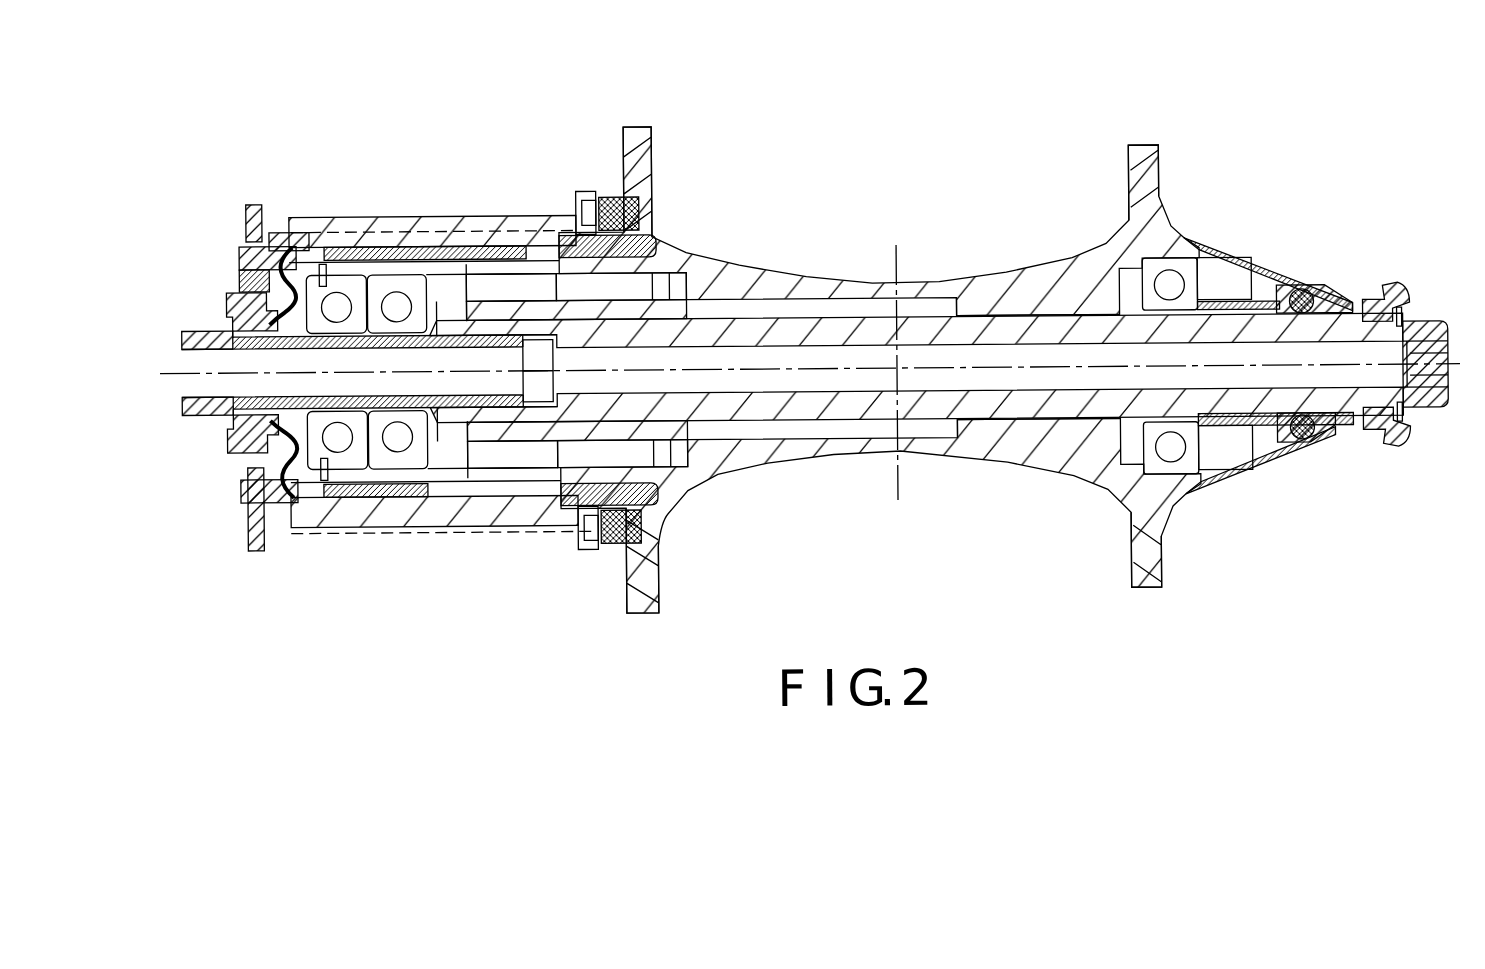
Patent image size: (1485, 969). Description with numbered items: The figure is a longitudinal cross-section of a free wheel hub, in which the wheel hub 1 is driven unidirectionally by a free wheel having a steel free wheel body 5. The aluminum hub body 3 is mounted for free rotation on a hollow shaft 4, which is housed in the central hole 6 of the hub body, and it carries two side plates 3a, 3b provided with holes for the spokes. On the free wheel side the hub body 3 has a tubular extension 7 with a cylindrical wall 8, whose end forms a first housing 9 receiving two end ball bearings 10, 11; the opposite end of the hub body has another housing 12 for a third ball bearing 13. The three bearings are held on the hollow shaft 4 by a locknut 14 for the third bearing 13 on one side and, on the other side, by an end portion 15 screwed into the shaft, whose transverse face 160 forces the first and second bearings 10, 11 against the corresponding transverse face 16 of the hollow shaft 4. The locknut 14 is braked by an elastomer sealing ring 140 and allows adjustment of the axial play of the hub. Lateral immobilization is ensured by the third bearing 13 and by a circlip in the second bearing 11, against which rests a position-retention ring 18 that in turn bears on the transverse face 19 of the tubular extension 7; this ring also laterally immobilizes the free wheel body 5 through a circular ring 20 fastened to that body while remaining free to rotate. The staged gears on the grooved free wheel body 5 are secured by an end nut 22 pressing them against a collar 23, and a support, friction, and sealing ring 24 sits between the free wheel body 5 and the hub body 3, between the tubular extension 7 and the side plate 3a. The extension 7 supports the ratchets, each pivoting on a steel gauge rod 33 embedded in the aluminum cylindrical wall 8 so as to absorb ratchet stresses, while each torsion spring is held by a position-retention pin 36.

The wheel hub 1 is at (818, 351).
The hub body 3 is at (956, 368).
The side plate 3a is at (659, 212).
The side plate 3b is at (1133, 199).
The hollow shaft 4 is at (939, 413).
The free wheel body 5 is at (425, 458).
The central hole 6 is at (1022, 403).
The tubular extension 7 is at (492, 436).
The cylindrical wall 8 is at (538, 457).
The first housing 9 is at (452, 433).
The first ball bearing 10 is at (336, 435).
The second ball bearing 11 is at (397, 429).
The housing 12 is at (1178, 413).
The third ball bearing 13 is at (1269, 408).
The locknut 14 is at (1370, 396).
The end portion 15 is at (224, 393).
The transverse face 16 is at (368, 282).
The position-retention ring 18 is at (376, 561).
The transverse face 19 is at (439, 334).
The circular ring 20 is at (424, 211).
The end nut 22 is at (249, 359).
The collar 23 is at (556, 335).
The support, friction, and sealing ring 24 is at (608, 336).
The gauge rod 33 is at (633, 328).
The position-retention pin 36 is at (577, 470).
The sealing ring 140 is at (1317, 318).
The transverse face 160 is at (263, 429).